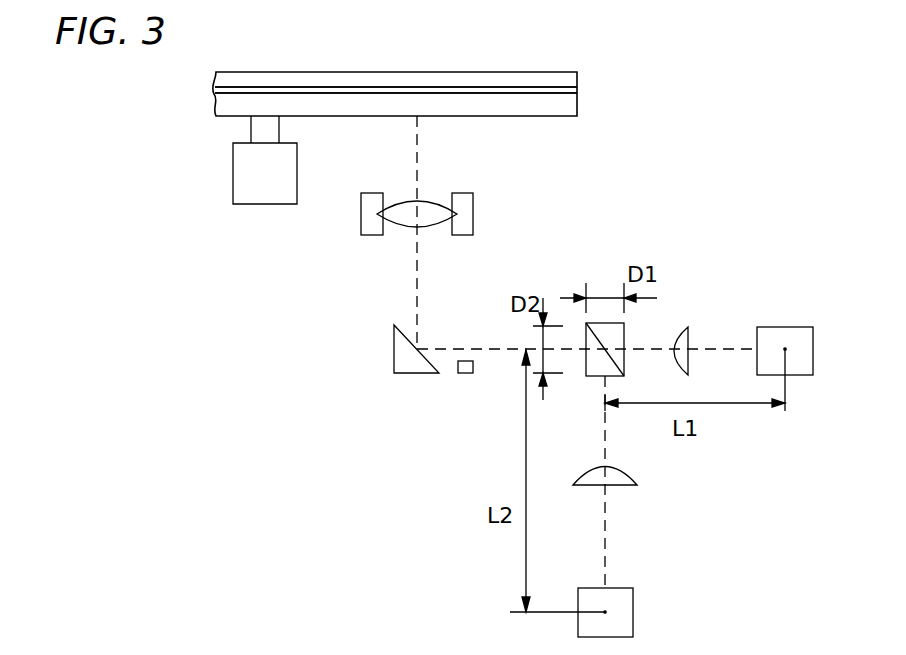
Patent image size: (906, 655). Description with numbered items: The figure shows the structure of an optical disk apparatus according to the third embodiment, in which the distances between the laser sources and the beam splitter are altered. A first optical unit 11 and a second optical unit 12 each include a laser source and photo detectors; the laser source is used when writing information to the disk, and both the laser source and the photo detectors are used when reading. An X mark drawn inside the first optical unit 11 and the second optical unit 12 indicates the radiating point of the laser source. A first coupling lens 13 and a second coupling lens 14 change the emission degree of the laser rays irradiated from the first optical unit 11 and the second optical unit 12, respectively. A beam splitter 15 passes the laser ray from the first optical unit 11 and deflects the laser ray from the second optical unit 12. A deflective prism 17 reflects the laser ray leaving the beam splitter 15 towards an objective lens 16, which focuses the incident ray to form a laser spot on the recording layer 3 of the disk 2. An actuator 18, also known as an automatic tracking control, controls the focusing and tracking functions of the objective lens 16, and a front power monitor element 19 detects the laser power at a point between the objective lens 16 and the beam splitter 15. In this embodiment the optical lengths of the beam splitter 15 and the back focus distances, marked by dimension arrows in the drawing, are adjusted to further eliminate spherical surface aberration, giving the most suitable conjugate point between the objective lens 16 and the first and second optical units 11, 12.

The disk 2 is at (583, 76).
The recording layer 3 is at (556, 91).
The first optical unit 11 is at (796, 340).
The second optical unit 12 is at (617, 612).
The first coupling lens 13 is at (685, 335).
The second coupling lens 14 is at (617, 480).
The beam splitter 15 is at (617, 342).
The objective lens 16 is at (400, 222).
The deflective prism 17 is at (412, 358).
The actuator 18 is at (465, 212).
The front power monitor element 19 is at (466, 373).